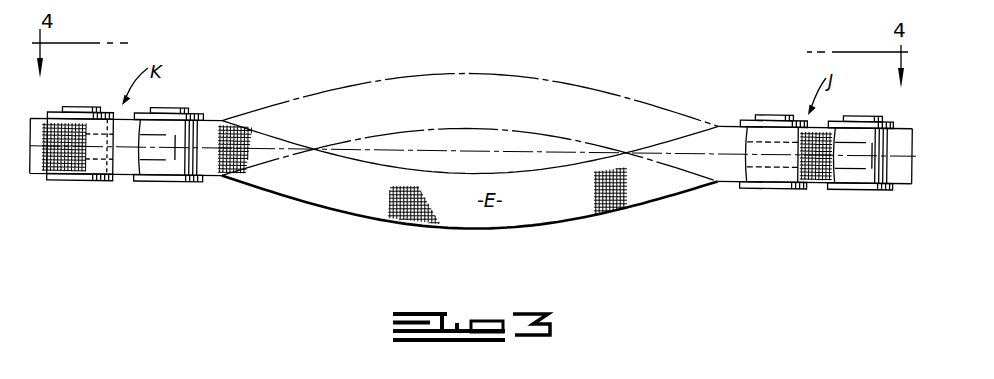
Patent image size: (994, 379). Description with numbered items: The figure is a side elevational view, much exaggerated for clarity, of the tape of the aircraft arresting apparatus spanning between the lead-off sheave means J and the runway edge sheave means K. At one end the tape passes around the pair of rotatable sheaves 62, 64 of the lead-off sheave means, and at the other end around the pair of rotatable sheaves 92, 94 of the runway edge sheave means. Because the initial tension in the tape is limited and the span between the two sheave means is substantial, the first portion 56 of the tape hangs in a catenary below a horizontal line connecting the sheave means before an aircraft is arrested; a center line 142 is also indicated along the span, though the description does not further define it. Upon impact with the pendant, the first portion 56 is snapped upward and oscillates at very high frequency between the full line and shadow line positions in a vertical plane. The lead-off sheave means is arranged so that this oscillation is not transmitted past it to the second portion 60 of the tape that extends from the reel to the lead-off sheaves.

The rotatable sheave 92 is at (80, 183).
The rotatable sheave 94 is at (163, 182).
The first portion of tape 56 is at (467, 215).
The axis center line 142 is at (515, 152).
The rotatable sheave 64 is at (763, 194).
The rotatable sheave 62 is at (860, 193).
The second portion of tape 60 is at (904, 176).